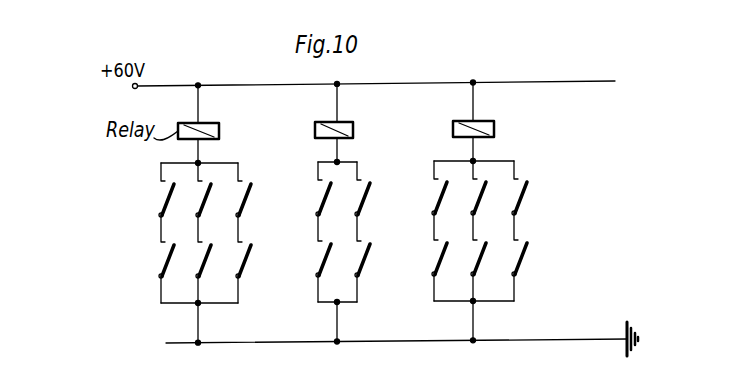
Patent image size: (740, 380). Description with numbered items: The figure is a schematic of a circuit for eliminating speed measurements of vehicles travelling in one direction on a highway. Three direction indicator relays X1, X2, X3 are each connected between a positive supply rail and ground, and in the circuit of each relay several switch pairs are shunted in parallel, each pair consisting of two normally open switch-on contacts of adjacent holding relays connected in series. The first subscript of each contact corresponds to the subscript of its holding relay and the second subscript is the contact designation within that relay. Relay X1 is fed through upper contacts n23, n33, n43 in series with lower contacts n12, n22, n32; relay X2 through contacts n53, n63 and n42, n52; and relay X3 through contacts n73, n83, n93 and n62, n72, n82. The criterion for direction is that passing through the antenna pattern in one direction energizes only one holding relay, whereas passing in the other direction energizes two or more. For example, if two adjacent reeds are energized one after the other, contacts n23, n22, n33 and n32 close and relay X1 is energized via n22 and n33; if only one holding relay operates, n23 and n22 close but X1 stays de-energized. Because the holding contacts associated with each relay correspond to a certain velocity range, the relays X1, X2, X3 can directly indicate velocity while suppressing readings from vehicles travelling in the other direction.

The direction indicator relay X1 is at (237, 105).
The direction indicator relay X2 is at (376, 104).
The direction indicator relay X3 is at (512, 103).
The normally open contact n23 is at (160, 188).
The normally open contact n33 is at (197, 188).
The normally open contact n43 is at (237, 188).
The normally open contact n12 is at (160, 249).
The normally open contact n22 is at (197, 249).
The normally open contact n32 is at (237, 249).
The normally open contact n53 is at (317, 187).
The normally open contact n63 is at (356, 187).
The normally open contact n42 is at (317, 248).
The normally open contact n52 is at (356, 248).
The normally open contact n73 is at (433, 186).
The normally open contact n83 is at (472, 186).
The normally open contact n93 is at (513, 186).
The normally open contact n62 is at (433, 247).
The normally open contact n72 is at (472, 247).
The normally open contact n82 is at (513, 247).